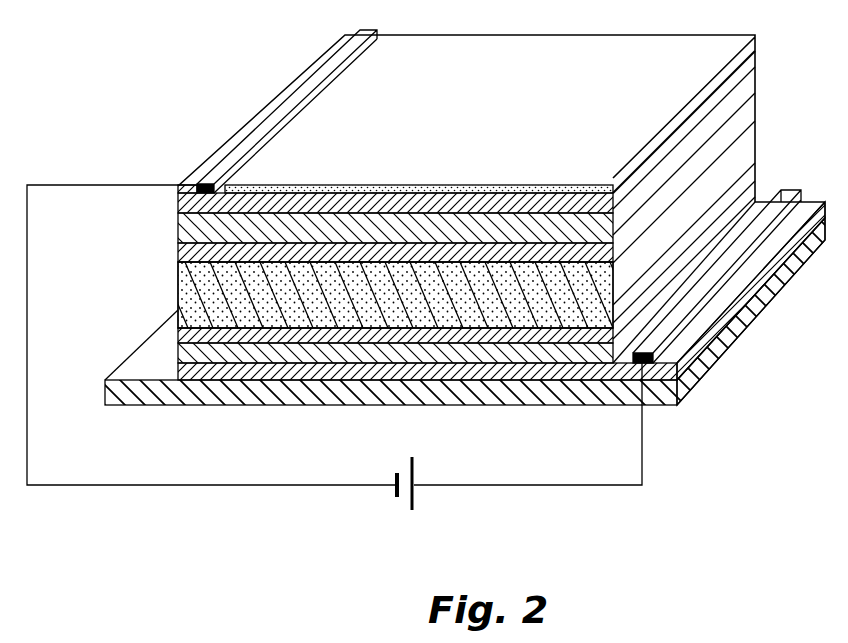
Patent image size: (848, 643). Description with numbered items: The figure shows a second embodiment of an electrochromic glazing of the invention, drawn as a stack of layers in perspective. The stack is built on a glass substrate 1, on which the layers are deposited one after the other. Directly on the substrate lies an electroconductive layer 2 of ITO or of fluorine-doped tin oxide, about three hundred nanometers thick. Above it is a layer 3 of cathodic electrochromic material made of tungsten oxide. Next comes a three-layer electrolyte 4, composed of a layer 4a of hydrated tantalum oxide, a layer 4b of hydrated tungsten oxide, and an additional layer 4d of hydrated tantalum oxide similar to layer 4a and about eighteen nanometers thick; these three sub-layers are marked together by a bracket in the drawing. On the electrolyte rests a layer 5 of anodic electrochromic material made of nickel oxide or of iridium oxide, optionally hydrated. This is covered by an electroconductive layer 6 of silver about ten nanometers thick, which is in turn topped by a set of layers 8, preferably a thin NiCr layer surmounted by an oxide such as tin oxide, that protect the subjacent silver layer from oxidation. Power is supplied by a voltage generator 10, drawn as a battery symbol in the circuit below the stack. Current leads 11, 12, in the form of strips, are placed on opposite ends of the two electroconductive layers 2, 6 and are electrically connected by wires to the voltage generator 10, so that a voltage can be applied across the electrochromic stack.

The glass substrate 1 is at (163, 393).
The electroconductive layer 2 is at (357, 383).
The layer of cathodic electrochromic material 3 is at (550, 358).
The three-layer electrolyte 4 is at (103, 232).
The layer of hydrated tantalum oxide 4a is at (178, 333).
The layer of hydrated tungsten oxide 4b is at (178, 290).
The layer of hydrated tantalum oxide 4d is at (178, 253).
The layer of anodic electrochromic material 5 is at (510, 220).
The electroconductive layer 6 is at (385, 205).
The set of protective layers 8 is at (301, 182).
The voltage generator 10 is at (402, 492).
The current lead 11 is at (702, 292).
The current lead 12 is at (222, 168).